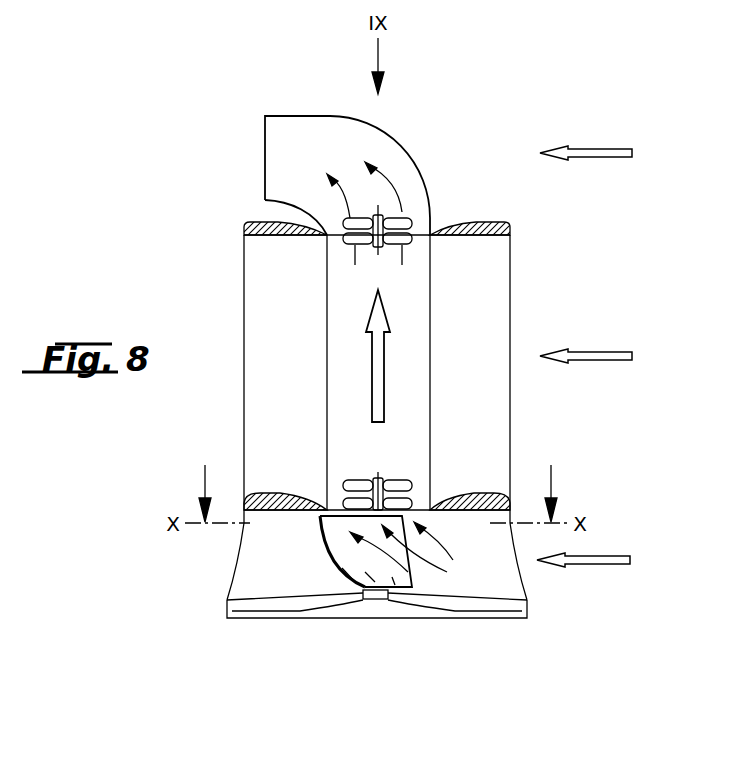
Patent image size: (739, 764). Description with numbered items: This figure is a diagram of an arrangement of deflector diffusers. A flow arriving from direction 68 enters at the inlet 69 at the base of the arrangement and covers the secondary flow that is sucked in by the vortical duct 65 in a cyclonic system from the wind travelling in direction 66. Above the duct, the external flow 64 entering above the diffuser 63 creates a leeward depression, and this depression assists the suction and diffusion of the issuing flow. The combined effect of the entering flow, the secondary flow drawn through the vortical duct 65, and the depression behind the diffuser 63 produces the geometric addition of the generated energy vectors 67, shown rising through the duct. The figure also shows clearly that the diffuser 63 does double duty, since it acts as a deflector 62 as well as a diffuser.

The deflector 62 is at (340, 552).
The diffuser 63 is at (282, 162).
The external flow 64 is at (600, 152).
The vortical duct 65 is at (405, 286).
The direction of wind 66 is at (600, 355).
The generated energy vectors 67 is at (378, 393).
The flow direction 68 is at (598, 560).
The inlet 69 is at (474, 590).